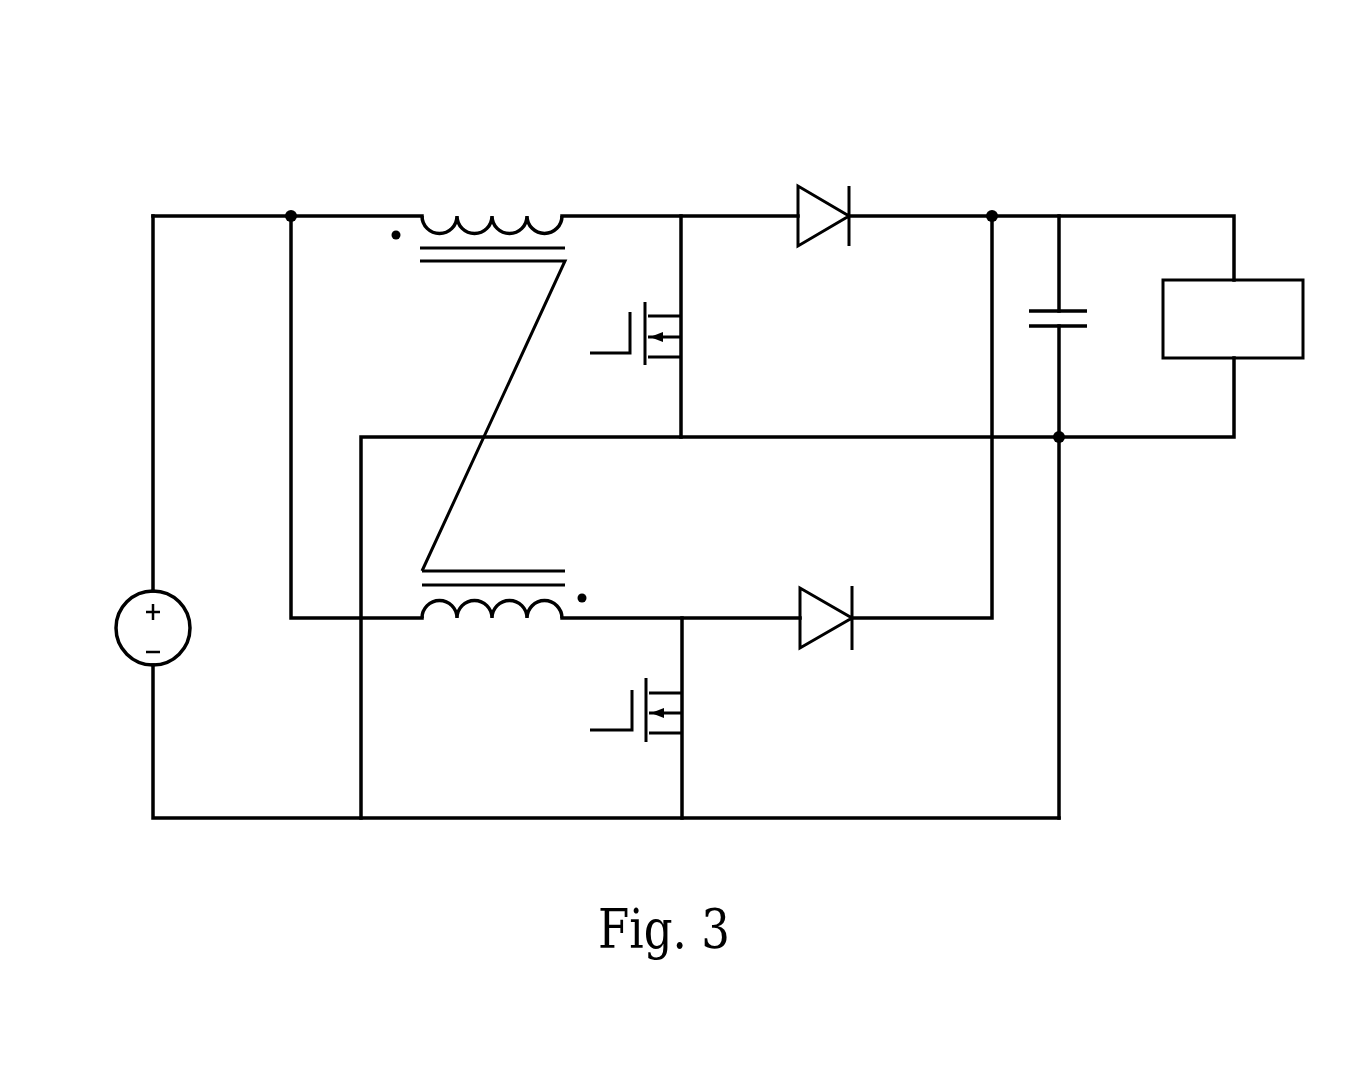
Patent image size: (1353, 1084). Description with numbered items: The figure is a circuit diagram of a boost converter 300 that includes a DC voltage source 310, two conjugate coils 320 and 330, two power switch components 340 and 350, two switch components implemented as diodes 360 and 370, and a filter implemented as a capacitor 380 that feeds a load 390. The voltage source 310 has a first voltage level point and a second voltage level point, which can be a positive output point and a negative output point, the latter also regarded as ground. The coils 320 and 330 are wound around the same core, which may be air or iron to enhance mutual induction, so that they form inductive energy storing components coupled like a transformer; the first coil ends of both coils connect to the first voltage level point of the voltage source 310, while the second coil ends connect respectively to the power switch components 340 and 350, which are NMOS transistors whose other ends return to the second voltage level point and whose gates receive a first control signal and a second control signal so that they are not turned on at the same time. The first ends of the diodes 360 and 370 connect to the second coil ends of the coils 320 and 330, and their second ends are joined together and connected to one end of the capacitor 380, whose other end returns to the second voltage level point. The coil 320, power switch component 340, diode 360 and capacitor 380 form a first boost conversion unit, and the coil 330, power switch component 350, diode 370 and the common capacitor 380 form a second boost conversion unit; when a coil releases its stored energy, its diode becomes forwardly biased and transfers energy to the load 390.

The boost converter 300 is at (1114, 146).
The voltage source 310 is at (132, 658).
The coil 320 is at (491, 192).
The coil 330 is at (501, 652).
The power switch component 340 is at (686, 325).
The power switch component 350 is at (687, 700).
The diode 360 is at (820, 194).
The diode 370 is at (826, 598).
The filter 380 is at (1067, 329).
The load 390 is at (1285, 360).